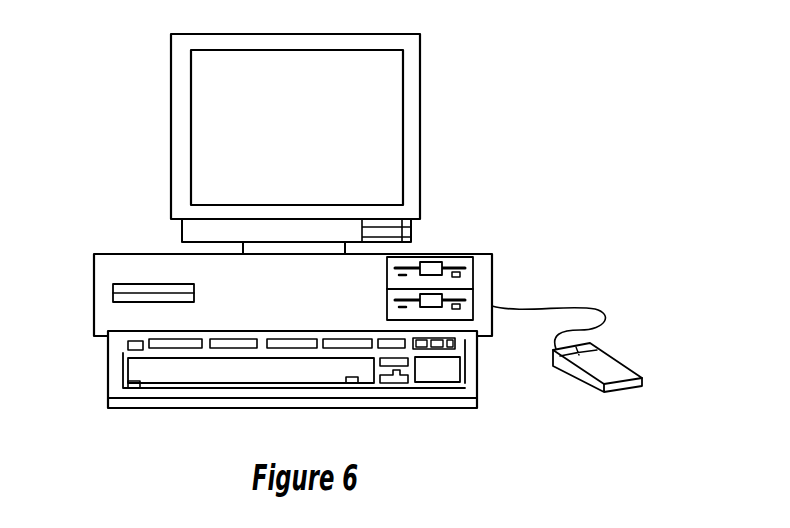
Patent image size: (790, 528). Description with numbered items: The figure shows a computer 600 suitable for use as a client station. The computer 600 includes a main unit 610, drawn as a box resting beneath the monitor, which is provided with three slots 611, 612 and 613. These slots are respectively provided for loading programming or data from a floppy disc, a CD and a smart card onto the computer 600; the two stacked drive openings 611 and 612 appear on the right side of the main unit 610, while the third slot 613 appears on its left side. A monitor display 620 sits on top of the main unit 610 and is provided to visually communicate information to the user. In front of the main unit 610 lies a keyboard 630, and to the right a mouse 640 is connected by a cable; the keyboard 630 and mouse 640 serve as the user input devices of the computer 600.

The computer 600 is at (354, 221).
The main unit 610 is at (123, 257).
The slot 611 is at (387, 277).
The slot 612 is at (387, 311).
The slot 613 is at (113, 290).
The monitor display 620 is at (413, 112).
The keyboard 630 is at (110, 378).
The mouse 640 is at (607, 358).